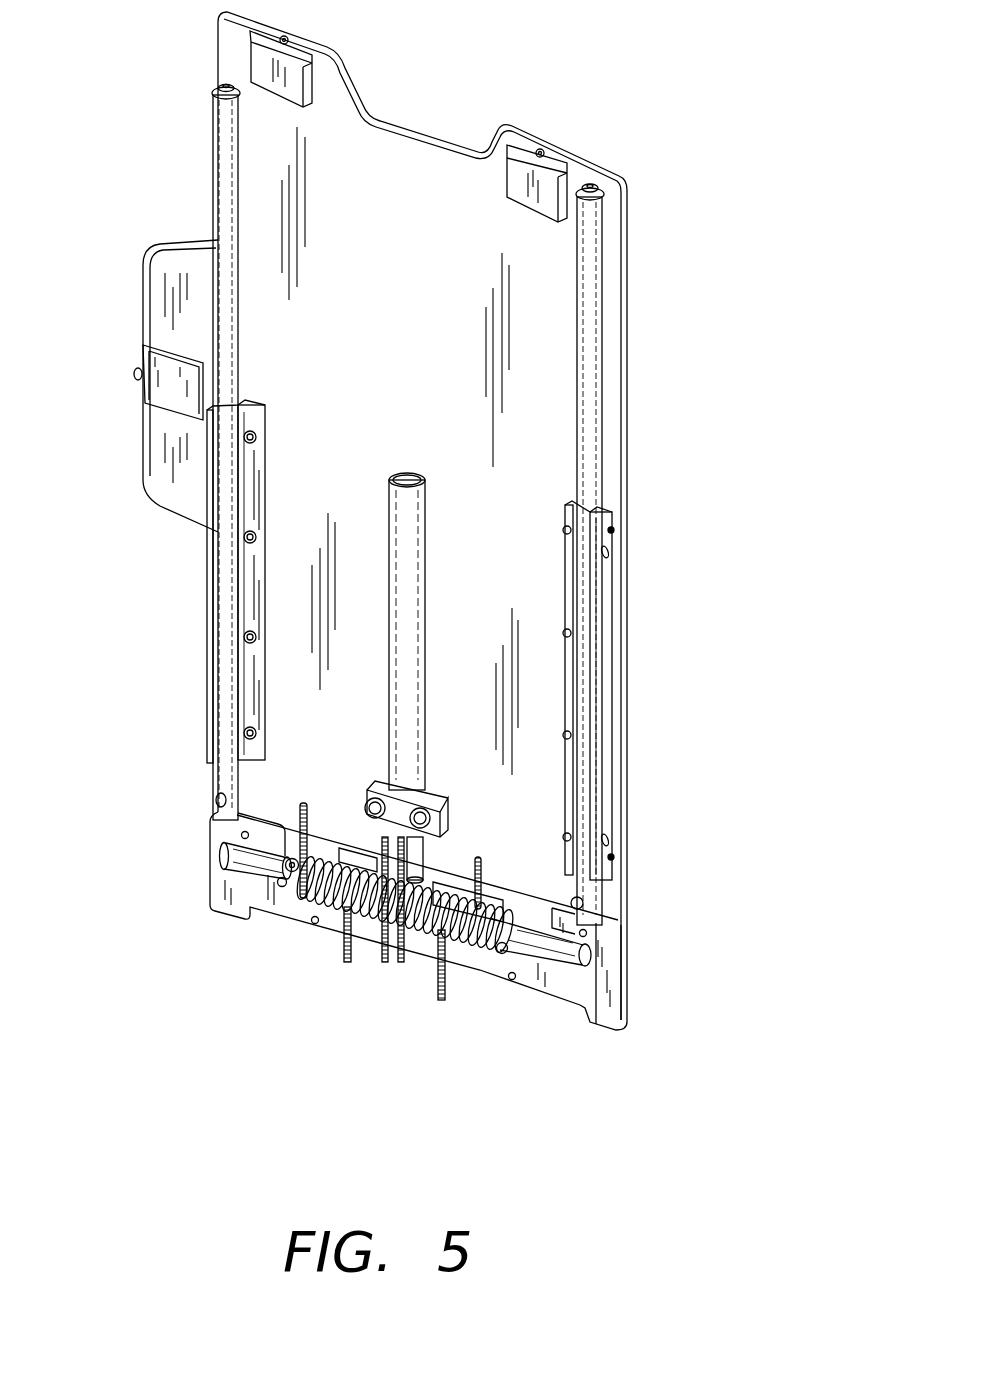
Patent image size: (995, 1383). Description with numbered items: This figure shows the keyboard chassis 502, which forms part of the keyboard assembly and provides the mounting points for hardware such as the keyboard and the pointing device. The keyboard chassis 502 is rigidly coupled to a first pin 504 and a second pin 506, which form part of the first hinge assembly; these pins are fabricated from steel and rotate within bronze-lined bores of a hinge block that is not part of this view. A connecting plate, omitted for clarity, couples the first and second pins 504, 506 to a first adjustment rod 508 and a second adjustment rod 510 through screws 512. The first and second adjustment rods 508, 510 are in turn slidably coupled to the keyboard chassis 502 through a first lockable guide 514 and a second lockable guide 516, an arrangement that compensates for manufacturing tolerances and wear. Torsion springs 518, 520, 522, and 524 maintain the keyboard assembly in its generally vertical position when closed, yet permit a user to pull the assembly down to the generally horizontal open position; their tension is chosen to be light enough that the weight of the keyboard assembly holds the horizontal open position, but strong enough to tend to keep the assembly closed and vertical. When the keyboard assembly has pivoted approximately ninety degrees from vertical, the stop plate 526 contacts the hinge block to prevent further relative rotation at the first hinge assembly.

The keyboard chassis 502 is at (392, 172).
The first pin 504 is at (222, 853).
The second pin 506 is at (567, 963).
The first adjustment rod 508 is at (225, 222).
The second adjustment rod 510 is at (590, 388).
The screws 512 is at (210, 800).
The first lockable guide 514 is at (213, 467).
The second lockable guide 516 is at (605, 587).
The torsion spring 518 is at (328, 912).
The torsion spring 520 is at (383, 908).
The torsion spring 522 is at (437, 920).
The torsion spring 524 is at (480, 950).
The stop plate 526 is at (617, 977).